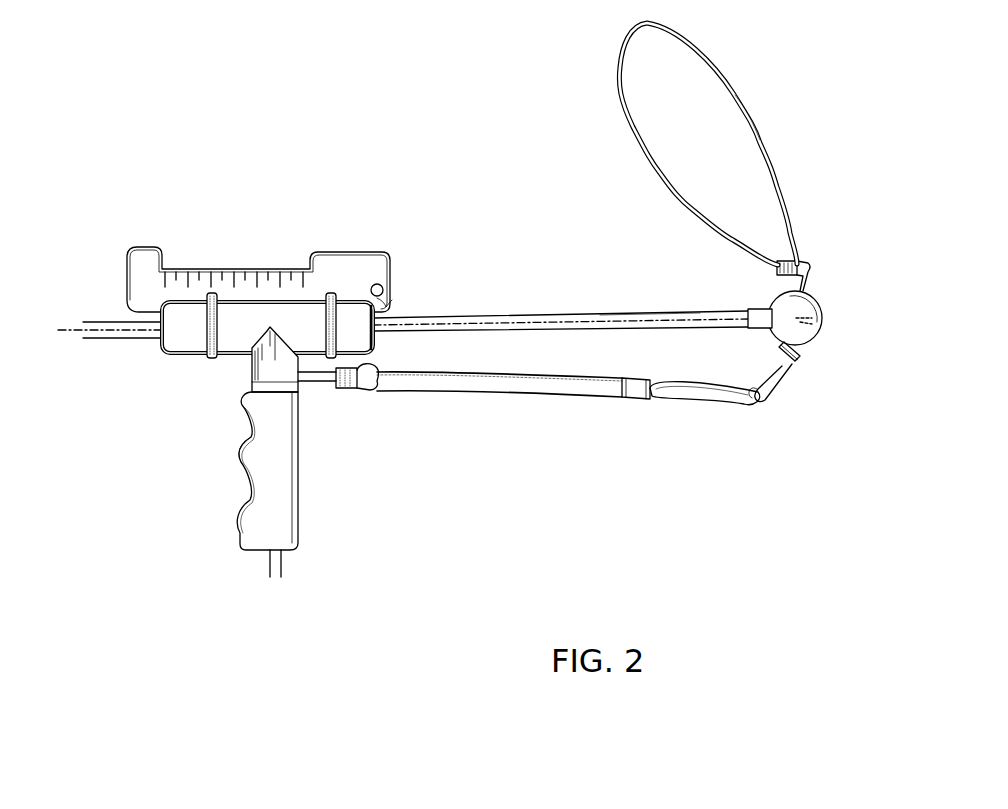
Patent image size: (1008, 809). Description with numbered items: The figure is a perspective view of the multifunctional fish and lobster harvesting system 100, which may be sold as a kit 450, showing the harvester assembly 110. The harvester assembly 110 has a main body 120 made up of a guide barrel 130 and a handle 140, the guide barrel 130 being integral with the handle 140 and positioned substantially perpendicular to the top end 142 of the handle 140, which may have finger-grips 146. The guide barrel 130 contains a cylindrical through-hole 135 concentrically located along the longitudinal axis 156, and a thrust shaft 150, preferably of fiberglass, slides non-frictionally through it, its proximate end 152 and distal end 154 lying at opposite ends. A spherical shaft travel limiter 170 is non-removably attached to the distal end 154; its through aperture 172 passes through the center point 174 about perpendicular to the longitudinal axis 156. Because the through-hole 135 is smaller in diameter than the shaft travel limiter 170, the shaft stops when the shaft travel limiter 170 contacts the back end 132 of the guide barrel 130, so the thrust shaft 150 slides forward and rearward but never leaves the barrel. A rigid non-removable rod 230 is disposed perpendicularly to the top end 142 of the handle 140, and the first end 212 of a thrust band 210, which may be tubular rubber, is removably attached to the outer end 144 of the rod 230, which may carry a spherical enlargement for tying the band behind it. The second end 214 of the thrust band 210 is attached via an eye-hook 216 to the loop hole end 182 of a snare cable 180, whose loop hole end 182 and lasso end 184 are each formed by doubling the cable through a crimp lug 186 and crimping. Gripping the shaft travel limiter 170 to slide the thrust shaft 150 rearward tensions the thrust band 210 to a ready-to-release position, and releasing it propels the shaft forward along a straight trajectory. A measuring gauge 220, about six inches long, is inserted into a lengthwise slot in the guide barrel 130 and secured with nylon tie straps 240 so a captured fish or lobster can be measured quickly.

The multifunctional fish and lobster harvesting system 100 is at (378, 96).
The harvester assembly 110 is at (370, 123).
The kit 450 is at (362, 156).
The main body 120 is at (188, 428).
The guide barrel 130 is at (165, 355).
The back end 132 is at (374, 348).
The cylindrical through-hole 135 is at (392, 305).
The handle 140 is at (294, 494).
The top end 142 is at (252, 355).
The outer end 144 is at (366, 389).
The finger-grips 146 is at (248, 505).
The thrust shaft 150 is at (455, 317).
The proximate end 152 is at (740, 309).
The distal end 154 is at (62, 371).
The longitudinal axis 156 is at (650, 312).
The shaft travel limiter 170 is at (805, 328).
The through aperture 172 is at (808, 276).
The center point 174 is at (815, 320).
The snare cable 180 is at (626, 40).
The loop hole end 182 is at (778, 400).
The lasso end 184 is at (745, 94).
The crimp lug 186 is at (806, 265).
The thrust band 210 is at (518, 386).
The first end 212 is at (336, 392).
The second end 214 is at (652, 399).
The eye-hook 216 is at (697, 380).
The measuring gauge 220 is at (150, 246).
The rigid non-removable rod 230 is at (522, 316).
The nylon tie straps 240 is at (325, 316).